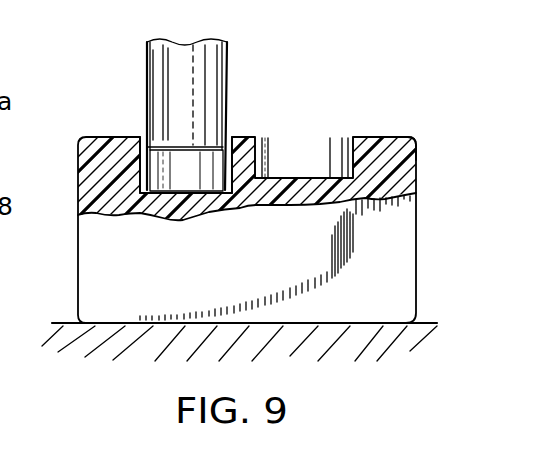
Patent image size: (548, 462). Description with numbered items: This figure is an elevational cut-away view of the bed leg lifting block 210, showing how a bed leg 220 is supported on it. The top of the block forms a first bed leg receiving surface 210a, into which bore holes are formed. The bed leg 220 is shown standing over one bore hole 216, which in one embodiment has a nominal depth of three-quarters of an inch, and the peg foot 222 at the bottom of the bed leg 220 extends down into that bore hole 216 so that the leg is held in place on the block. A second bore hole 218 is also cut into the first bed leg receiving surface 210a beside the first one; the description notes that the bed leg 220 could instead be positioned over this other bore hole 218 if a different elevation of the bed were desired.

The bed leg lifting block 210 is at (46, 294).
The first bed leg receiving surface 210a is at (398, 137).
The bore hole 216 is at (133, 100).
The bore hole 218 is at (312, 163).
The bed leg 220 is at (233, 62).
The peg foot 222 is at (183, 157).